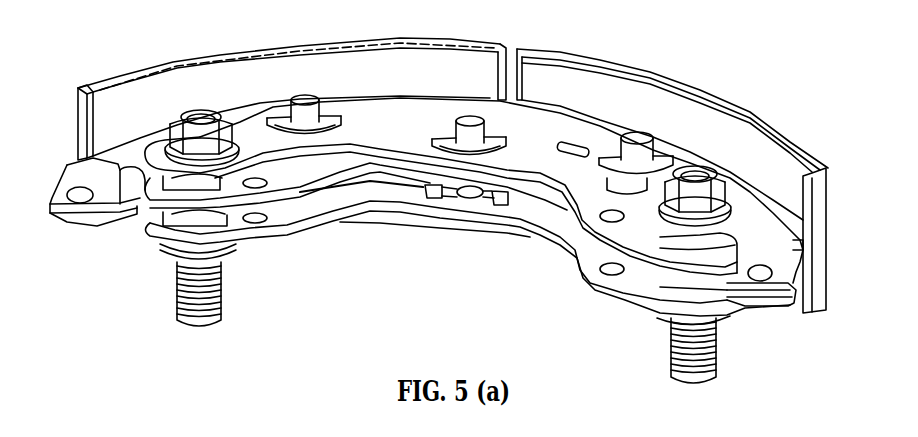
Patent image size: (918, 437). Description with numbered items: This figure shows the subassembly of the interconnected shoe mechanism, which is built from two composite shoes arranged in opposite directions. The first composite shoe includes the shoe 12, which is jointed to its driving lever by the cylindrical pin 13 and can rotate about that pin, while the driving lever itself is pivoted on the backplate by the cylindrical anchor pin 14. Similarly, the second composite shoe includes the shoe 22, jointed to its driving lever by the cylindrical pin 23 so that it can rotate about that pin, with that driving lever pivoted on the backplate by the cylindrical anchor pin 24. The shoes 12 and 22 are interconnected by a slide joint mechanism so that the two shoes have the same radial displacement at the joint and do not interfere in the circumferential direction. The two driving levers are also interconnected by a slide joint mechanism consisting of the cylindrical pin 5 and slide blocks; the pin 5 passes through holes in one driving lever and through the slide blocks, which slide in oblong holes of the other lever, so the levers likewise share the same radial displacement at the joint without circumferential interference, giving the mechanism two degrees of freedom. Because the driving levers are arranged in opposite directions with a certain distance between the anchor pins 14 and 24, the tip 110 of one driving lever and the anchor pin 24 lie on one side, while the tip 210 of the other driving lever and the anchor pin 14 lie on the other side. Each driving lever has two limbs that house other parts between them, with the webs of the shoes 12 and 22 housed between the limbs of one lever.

The shoe 12 is at (407, 72).
The shoe 22 is at (567, 85).
The cylindrical anchor pin 14 is at (200, 115).
The cylindrical pin 13 is at (307, 100).
The cylindrical pin 5 is at (471, 120).
The cylindrical pin 23 is at (637, 140).
The cylindrical anchor pin 24 is at (692, 172).
The tip of driving lever 210 is at (73, 213).
The tip of driving lever 110 is at (762, 293).